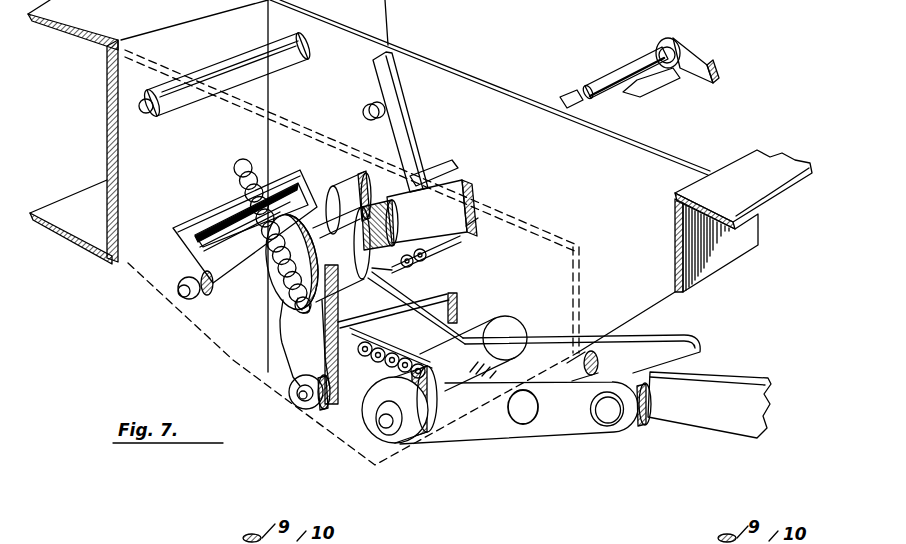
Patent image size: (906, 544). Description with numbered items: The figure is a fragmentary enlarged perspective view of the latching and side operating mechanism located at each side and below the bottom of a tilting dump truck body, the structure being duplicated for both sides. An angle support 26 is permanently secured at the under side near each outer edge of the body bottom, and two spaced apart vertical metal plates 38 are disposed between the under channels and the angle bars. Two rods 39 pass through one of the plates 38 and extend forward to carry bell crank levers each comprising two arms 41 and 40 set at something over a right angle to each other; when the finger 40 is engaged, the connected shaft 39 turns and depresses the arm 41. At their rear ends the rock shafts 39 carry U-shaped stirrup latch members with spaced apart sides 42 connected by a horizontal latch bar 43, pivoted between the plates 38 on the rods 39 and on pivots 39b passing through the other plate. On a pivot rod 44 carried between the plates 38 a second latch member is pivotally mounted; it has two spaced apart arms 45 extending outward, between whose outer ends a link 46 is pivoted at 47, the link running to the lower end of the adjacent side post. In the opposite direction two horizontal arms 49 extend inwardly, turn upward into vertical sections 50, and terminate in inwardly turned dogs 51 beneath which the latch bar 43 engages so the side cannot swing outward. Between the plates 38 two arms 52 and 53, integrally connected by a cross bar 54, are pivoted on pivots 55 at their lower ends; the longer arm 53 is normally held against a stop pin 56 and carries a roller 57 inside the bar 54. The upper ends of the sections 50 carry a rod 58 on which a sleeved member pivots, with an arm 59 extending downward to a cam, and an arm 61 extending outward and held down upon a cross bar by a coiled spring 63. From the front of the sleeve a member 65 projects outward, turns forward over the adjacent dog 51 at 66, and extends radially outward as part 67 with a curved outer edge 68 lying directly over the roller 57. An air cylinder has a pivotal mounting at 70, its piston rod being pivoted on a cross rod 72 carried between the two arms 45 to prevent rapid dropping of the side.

The angle support 26 is at (731, 250).
The vertical metal plates 38 is at (485, 90).
The rods 39 is at (596, 82).
The pivots 39b is at (186, 298).
The arm of bell crank lever 40 is at (700, 64).
The arm of bell crank lever 41 is at (642, 84).
The sides of latch member 42 is at (312, 195).
The latch bar 43 is at (224, 206).
The pivot rod 44 is at (392, 445).
The arms 45 is at (520, 383).
The link 46 is at (703, 425).
The pivot 47 is at (612, 413).
The horizontal arms 49 is at (458, 318).
The vertical sections 50 is at (372, 268).
The dogs 51 is at (345, 192).
The arm 52 is at (295, 352).
The arm 53 is at (407, 114).
The cross bar 54 is at (457, 306).
The pivots 55 is at (258, 175).
The stop pin 56 is at (372, 103).
The roller 57 is at (432, 252).
The rod 58 is at (268, 280).
The arm 59 is at (320, 284).
The arm 61 is at (432, 344).
The coiled spring 63 is at (362, 360).
The member 65 is at (362, 224).
The forwardly turned portion 66 is at (430, 175).
The part 67 is at (473, 206).
The curved outer edge 68 is at (478, 218).
The pivotal mounting 70 is at (197, 102).
The cross rod 72 is at (578, 371).